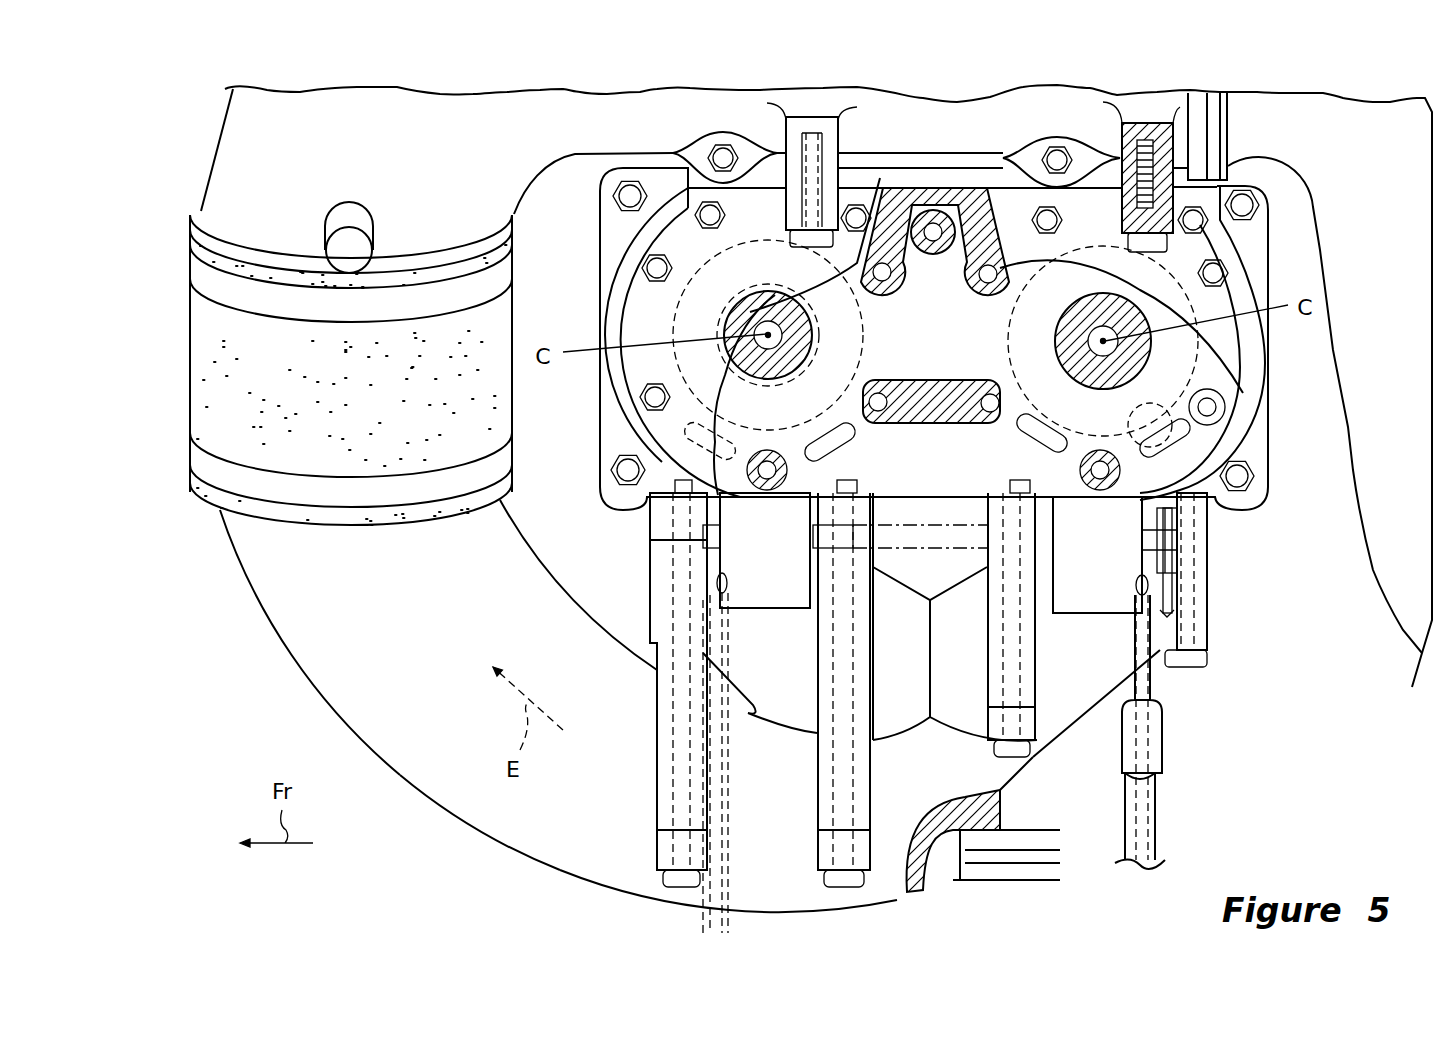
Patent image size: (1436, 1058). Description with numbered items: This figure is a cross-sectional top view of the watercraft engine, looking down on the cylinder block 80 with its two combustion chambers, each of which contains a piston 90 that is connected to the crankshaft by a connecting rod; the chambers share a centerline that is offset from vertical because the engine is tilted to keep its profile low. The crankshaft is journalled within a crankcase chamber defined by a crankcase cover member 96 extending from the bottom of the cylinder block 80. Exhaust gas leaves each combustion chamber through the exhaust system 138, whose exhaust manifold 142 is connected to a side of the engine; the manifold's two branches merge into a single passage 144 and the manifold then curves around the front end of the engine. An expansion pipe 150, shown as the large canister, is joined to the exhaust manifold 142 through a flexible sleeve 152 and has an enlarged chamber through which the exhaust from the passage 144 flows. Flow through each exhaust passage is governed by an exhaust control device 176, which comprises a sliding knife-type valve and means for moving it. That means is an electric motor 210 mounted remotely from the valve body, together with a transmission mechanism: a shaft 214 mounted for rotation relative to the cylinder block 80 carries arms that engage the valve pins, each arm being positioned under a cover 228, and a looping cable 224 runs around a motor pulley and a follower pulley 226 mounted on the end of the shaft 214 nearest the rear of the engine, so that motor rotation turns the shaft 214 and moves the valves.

The cylinder block 80 is at (1250, 257).
The piston 90 is at (860, 332).
The crankcase cover member 96 is at (1268, 440).
The exhaust system 138 is at (418, 790).
The exhaust manifold 142 is at (477, 787).
The single passage 144 is at (297, 618).
The expansion pipe 150 is at (547, 147).
The flexible sleeve 152 is at (418, 455).
The exhaust control device 176 is at (1273, 733).
The electric motor 210 is at (1070, 620).
The shaft 214 is at (1038, 540).
The looping cable 224 is at (1173, 595).
The follower pulley 226 is at (1177, 532).
The cover 228 is at (777, 590).